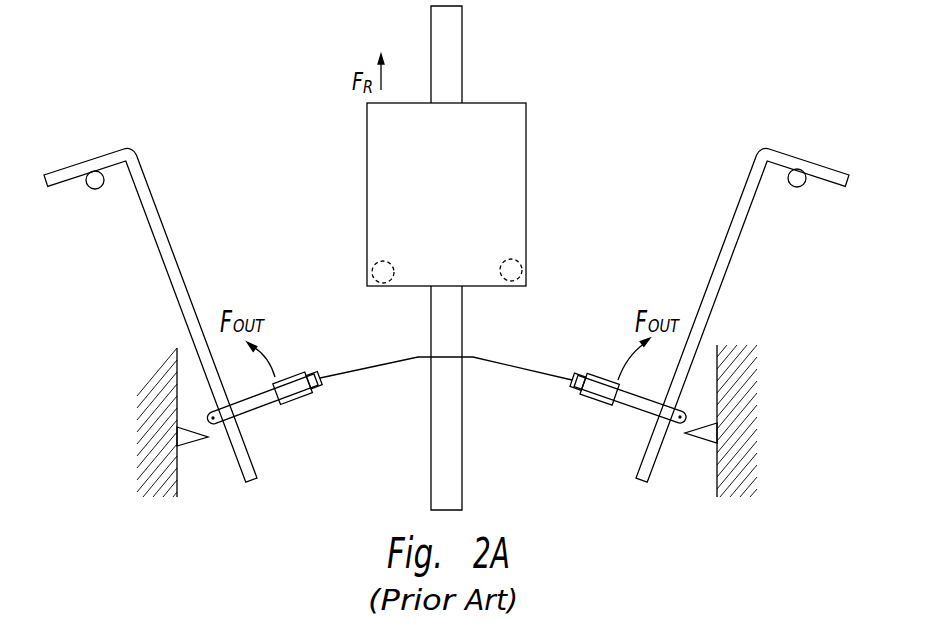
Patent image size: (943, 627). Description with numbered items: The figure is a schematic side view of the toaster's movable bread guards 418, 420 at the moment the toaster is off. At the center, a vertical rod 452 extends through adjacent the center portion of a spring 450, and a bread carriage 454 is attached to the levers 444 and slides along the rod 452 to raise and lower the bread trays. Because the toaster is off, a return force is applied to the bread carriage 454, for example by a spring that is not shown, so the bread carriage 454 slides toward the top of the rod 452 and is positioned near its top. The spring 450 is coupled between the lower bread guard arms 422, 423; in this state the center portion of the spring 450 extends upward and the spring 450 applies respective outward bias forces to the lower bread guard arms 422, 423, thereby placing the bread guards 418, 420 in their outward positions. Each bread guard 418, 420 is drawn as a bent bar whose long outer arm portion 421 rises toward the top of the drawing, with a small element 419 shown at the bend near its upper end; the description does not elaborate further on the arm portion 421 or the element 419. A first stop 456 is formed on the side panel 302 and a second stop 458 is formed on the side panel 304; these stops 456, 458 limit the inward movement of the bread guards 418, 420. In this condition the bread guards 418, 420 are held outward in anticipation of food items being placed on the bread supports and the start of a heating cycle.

The side panel 302 is at (157, 412).
The side panel 304 is at (742, 443).
The movable bread guard 418 is at (125, 110).
The pivot pin / roller on lever arm 419 is at (97, 187).
The movable bread guard 420 is at (780, 108).
The lever arm portion 421 is at (172, 247).
The lower bread guard arm 422 is at (283, 390).
The lower bread guard arm 423 is at (602, 385).
The levers 444 is at (383, 280).
The spring 450 is at (368, 378).
The vertical rod 452 is at (440, 28).
The bread carriage 454 is at (525, 130).
The first stop 456 is at (190, 437).
The second stop 458 is at (707, 433).